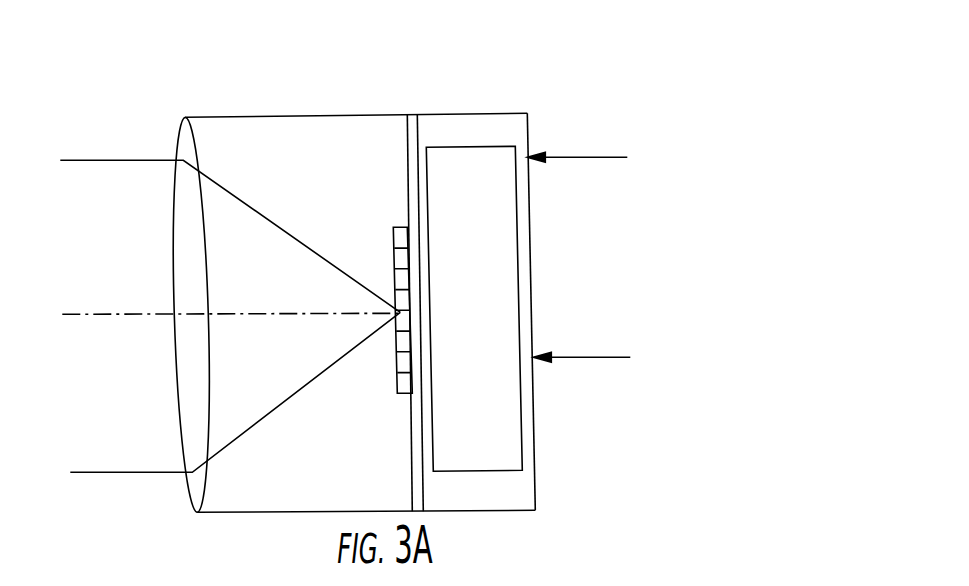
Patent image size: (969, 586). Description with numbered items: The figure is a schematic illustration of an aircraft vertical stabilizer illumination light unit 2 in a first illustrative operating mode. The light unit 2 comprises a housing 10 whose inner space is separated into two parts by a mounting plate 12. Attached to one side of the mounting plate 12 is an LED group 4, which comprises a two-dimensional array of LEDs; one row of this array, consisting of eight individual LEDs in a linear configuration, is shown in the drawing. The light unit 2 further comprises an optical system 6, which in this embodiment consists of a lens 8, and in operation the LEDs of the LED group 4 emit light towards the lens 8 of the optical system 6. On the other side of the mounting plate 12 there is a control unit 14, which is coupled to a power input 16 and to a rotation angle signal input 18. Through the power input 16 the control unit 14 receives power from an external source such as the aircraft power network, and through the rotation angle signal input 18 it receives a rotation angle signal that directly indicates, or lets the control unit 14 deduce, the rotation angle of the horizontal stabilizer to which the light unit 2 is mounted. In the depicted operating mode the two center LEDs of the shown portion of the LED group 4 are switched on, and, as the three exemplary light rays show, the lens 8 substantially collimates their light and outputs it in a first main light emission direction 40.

The aircraft vertical stabilizer illumination light unit 2 is at (317, 264).
The LED group 4 is at (367, 324).
The optical system 6 is at (220, 316).
The lens 8 is at (156, 315).
The housing 10 is at (512, 264).
The mounting plate 12 is at (407, 265).
The control unit 14 is at (474, 246).
The power input 16 is at (589, 394).
The rotation angle signal input 18 is at (584, 119).
The first main light emission direction 40 is at (231, 270).